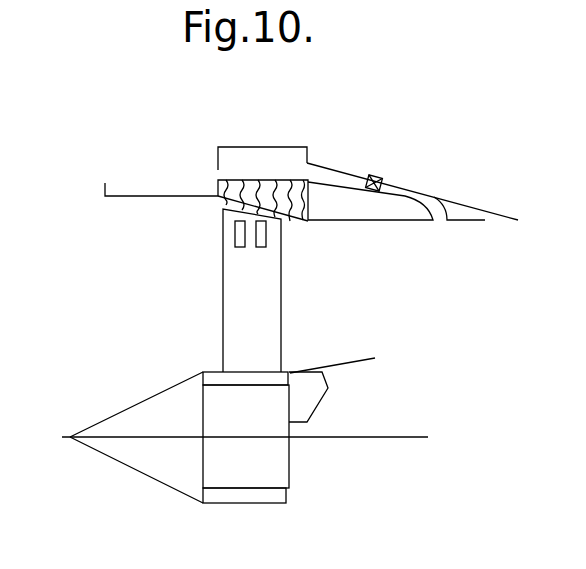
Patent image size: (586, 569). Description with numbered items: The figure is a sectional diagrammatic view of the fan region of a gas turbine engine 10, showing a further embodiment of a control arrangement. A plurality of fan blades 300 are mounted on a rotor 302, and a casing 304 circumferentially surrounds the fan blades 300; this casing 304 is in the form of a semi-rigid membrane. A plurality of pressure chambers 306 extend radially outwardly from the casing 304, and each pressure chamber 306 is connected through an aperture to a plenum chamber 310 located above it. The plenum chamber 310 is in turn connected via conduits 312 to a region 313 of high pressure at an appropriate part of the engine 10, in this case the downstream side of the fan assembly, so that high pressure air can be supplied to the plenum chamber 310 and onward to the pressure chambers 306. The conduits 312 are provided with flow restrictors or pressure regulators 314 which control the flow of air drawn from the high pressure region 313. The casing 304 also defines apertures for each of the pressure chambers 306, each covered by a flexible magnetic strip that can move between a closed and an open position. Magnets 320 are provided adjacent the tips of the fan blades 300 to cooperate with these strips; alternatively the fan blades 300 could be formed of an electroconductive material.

The engine 10 is at (150, 162).
The fan blades 300 is at (233, 316).
The rotor 302 is at (153, 405).
The casing 304 is at (263, 204).
The pressure chambers 306 is at (242, 190).
The plenum chamber 310 is at (254, 158).
The conduits 312 is at (333, 172).
The region of high pressure 313 is at (447, 240).
The flow restrictors or pressure regulators 314 is at (377, 176).
The magnets 320 is at (262, 237).